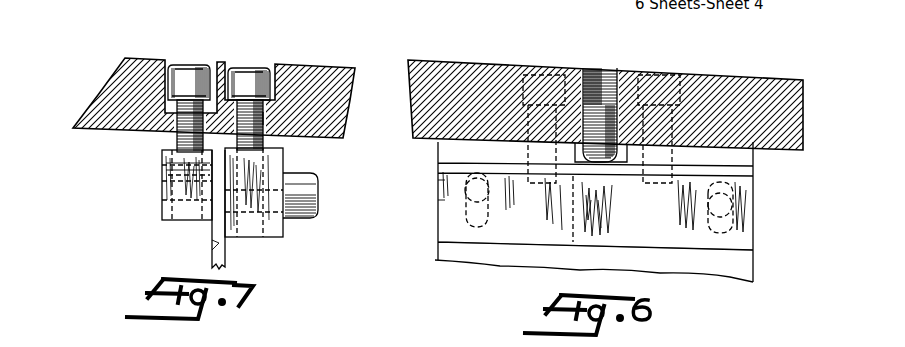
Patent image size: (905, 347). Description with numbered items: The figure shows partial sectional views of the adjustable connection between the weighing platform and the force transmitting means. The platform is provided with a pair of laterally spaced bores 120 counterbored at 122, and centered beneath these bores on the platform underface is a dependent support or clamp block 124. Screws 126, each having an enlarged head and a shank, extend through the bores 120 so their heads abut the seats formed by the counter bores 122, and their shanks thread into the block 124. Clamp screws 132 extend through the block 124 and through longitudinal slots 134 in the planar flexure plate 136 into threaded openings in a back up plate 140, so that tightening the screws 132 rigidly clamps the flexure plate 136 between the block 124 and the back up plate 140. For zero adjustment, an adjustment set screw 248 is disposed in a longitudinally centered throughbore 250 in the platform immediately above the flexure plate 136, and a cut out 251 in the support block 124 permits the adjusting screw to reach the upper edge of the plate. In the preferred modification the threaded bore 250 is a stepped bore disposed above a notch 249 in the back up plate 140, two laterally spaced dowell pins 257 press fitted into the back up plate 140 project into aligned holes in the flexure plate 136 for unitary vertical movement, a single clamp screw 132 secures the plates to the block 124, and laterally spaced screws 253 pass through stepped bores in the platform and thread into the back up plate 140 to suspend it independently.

In FIG. 7, the bores 120 is at (268, 114).
In FIG. 7, the counter bores 122 is at (273, 73).
In FIG. 6, the counter bores 122 is at (707, 72).
In FIG. 7, the support or clamp block 124 is at (283, 227).
In FIG. 6, the support or clamp block 124 is at (756, 160).
In FIG. 7, the screws 126 is at (241, 80).
In FIG. 6, the screws 126 is at (535, 62).
In FIG. 7, the clamp screws 132 is at (307, 191).
In FIG. 6, the clamp screws 132 is at (488, 207).
In FIG. 7, the longitudinal slots 134 is at (208, 243).
In FIG. 6, the longitudinal slots 134 is at (467, 216).
In FIG. 7, the flexure plate 136 is at (223, 257).
In FIG. 6, the flexure plate 136 is at (453, 156).
In FIG. 7, the back up plate 140 is at (166, 207).
In FIG. 6, the back up plate 140 is at (450, 185).
In FIG. 6, the adjustment set screw 248 is at (575, 147).
In FIG. 7, the notch 249 is at (169, 164).
In FIG. 7, the throughbore 250 is at (176, 124).
In FIG. 6, the throughbore 250 is at (590, 68).
In FIG. 6, the cut out 251 is at (622, 228).
In FIG. 7, the screws 253 is at (189, 80).
In FIG. 7, the dowell pins 257 is at (170, 173).